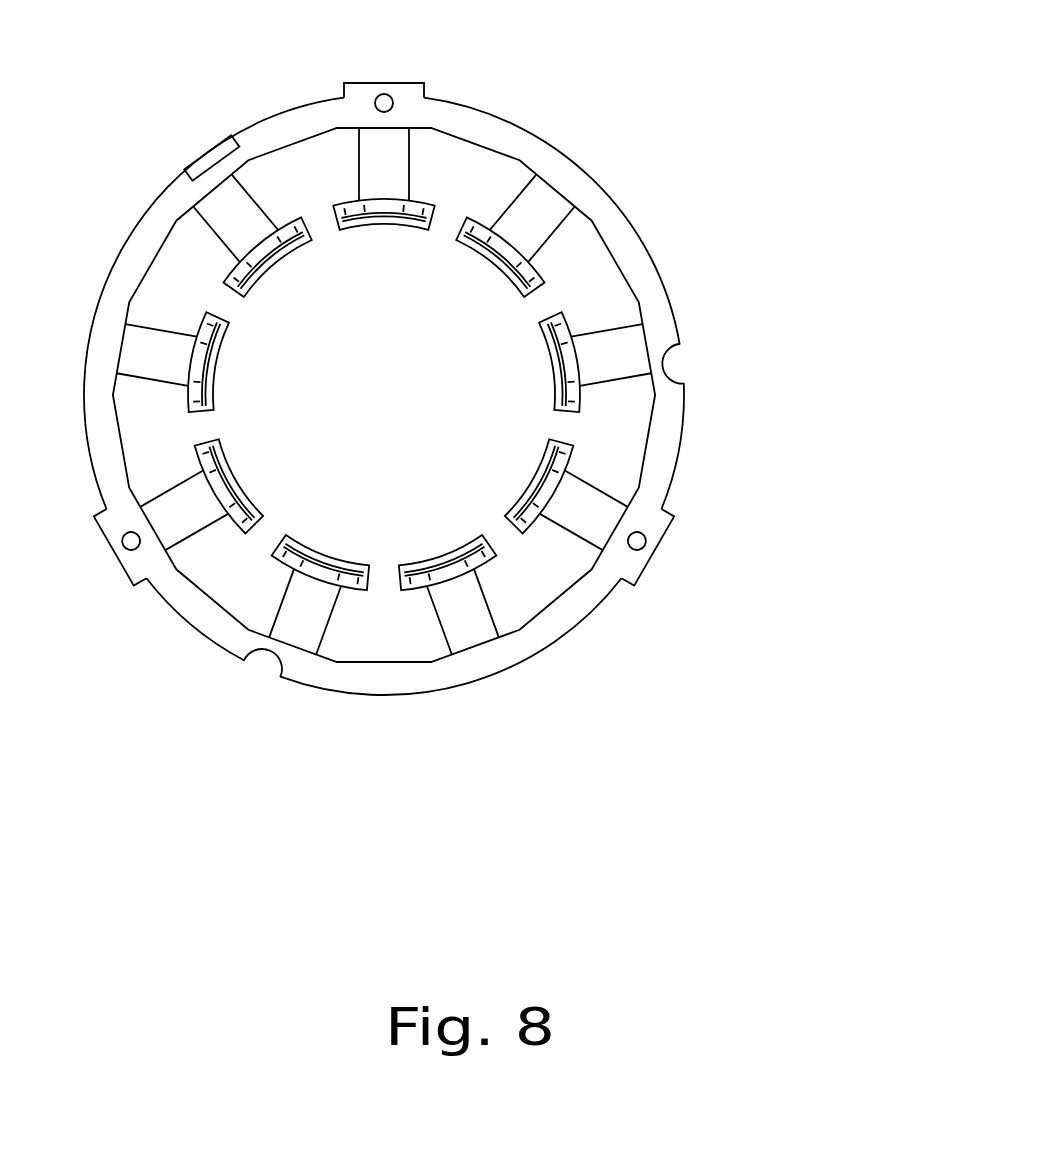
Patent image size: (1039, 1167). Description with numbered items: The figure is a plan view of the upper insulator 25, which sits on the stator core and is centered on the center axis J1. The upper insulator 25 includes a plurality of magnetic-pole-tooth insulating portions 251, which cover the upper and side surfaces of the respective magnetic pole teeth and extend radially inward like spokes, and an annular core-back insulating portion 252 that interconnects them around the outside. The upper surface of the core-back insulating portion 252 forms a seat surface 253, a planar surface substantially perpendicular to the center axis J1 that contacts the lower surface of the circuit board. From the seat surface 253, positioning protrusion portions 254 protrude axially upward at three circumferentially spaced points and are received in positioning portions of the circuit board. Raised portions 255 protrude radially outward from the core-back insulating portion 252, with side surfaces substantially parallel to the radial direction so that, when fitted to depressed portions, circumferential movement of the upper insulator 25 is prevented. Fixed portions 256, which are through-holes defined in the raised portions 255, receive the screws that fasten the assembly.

The upper insulator 25 is at (92, 45).
The magnetic-pole-tooth insulating portions 251 is at (578, 513).
The core-back insulating portion 252 is at (596, 207).
The seat surface 253 is at (638, 260).
The positioning protrusion portions 254 is at (205, 158).
The raised portions 255 is at (361, 88).
The fixed portions 256 is at (386, 102).
The center axis J1 is at (384, 395).